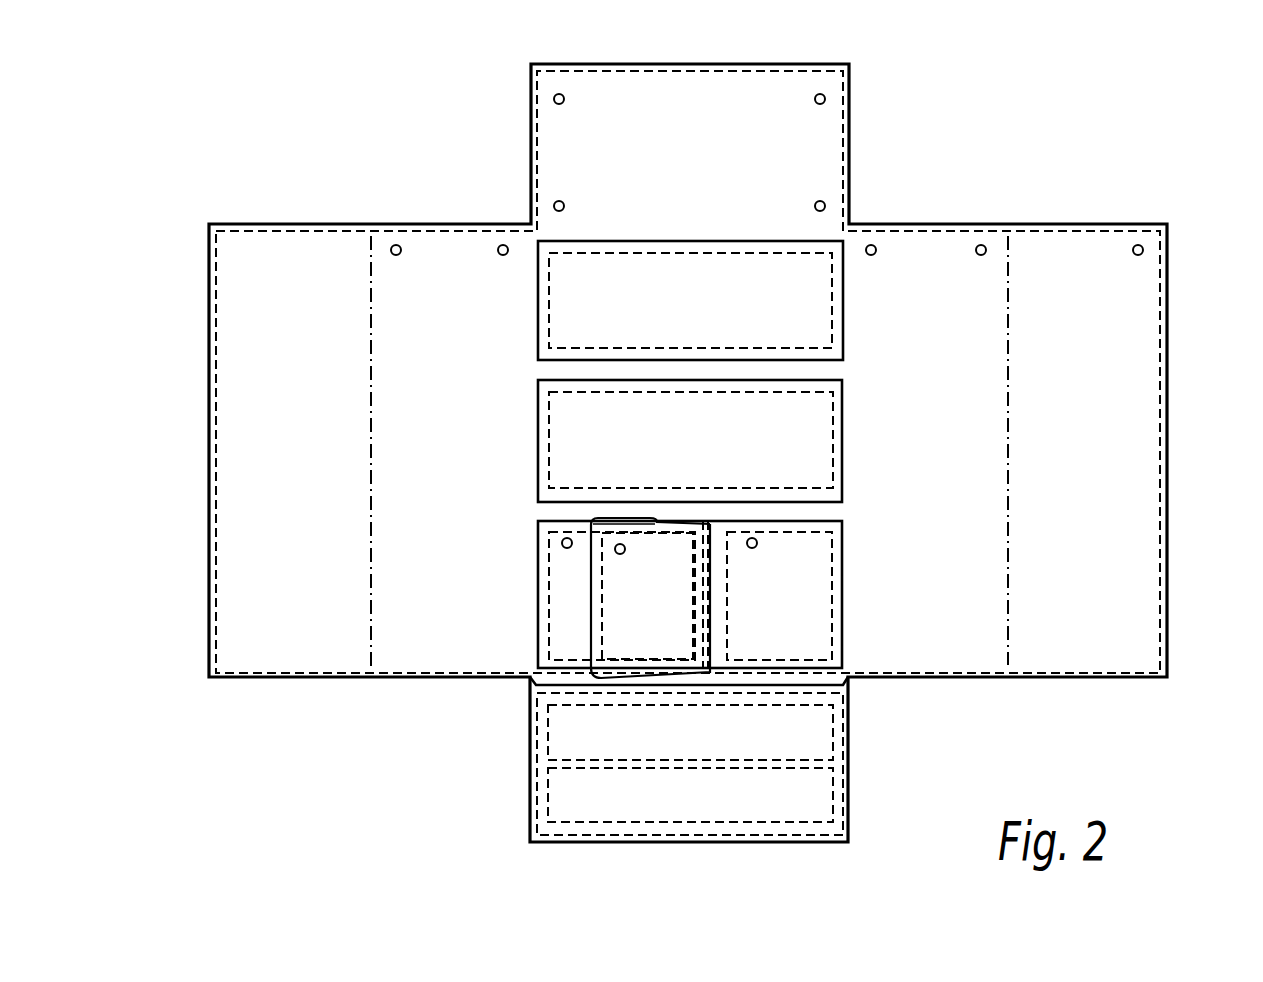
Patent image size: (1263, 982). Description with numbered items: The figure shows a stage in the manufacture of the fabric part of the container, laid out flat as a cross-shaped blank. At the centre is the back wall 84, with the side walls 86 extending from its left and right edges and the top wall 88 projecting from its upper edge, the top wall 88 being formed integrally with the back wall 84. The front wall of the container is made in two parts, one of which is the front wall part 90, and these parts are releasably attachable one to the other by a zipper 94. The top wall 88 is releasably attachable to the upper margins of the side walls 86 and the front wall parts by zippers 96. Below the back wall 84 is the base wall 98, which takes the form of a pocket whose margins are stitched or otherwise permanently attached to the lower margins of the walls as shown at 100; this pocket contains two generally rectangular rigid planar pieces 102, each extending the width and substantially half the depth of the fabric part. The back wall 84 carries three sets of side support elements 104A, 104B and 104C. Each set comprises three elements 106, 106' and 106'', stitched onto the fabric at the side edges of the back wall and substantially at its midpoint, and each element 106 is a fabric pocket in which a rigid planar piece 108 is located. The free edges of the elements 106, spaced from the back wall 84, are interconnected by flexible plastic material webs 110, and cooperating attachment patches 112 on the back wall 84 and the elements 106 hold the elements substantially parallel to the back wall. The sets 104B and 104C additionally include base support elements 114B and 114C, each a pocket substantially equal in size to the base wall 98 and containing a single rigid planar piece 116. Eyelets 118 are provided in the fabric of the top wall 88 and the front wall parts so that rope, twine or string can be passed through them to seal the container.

The back wall 84 is at (835, 510).
The side walls 86 is at (407, 630).
The top wall 88 is at (654, 92).
The front wall part 90 is at (237, 341).
The zipper 94 is at (210, 457).
The zippers 96 is at (742, 62).
The base wall 98 is at (752, 845).
The stitching 100 is at (530, 720).
The rigid planar pieces 102 is at (580, 745).
The set of side support elements 104A is at (860, 578).
The set of side support elements 104B is at (526, 409).
The set of side support elements 104C is at (526, 298).
The side support element 106 is at (567, 596).
The side support element 106' is at (832, 599).
The side support element 106'' is at (653, 638).
The rigid planar piece 108 is at (623, 580).
The flexible plastic material webs 110 is at (713, 521).
The cooperating attachment patches 112 is at (567, 543).
The base support element 114B is at (845, 405).
The base support element 114C is at (735, 240).
The rigid planar piece 116 is at (664, 283).
The eyelets 118 is at (559, 104).